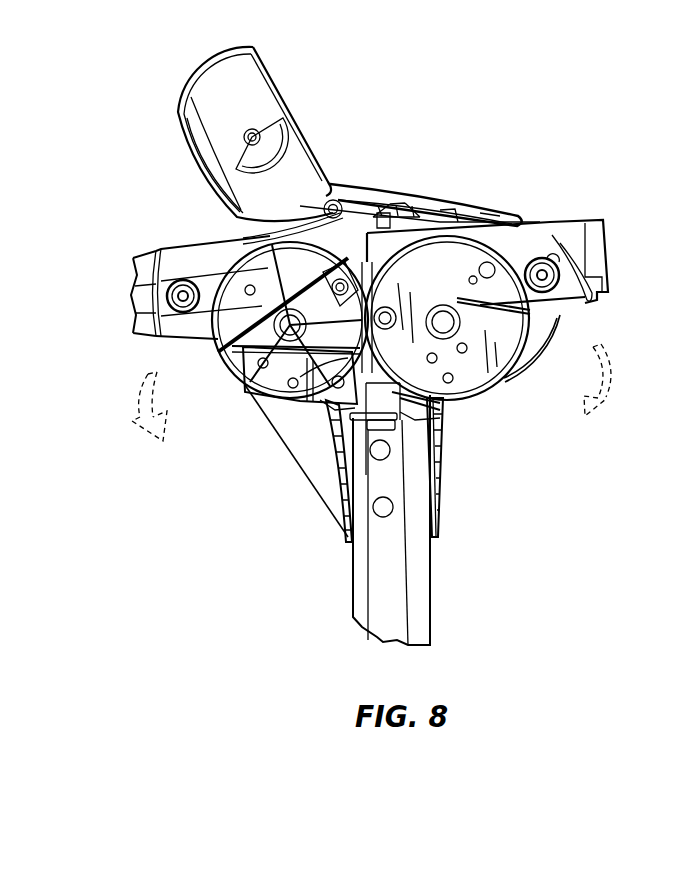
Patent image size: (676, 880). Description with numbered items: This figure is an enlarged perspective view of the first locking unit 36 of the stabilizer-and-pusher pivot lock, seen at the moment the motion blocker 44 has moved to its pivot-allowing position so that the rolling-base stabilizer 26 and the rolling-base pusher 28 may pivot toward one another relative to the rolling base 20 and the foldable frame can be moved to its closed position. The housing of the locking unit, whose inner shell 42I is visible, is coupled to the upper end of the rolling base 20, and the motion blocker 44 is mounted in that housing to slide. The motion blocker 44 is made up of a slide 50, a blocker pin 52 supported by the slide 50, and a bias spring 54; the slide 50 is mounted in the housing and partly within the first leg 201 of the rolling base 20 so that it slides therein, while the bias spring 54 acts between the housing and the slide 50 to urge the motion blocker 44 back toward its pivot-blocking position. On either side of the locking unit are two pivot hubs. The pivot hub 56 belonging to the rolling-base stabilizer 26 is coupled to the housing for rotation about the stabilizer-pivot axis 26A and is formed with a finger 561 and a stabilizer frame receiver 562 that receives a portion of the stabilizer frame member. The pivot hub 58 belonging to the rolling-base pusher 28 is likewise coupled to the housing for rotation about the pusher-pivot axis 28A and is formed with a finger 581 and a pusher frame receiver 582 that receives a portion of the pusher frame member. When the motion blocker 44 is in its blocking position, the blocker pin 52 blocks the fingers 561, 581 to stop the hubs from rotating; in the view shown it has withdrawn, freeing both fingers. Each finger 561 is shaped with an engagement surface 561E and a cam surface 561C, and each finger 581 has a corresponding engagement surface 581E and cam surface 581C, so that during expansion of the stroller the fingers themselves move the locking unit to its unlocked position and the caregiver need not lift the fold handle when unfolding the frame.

The rolling base 20 is at (440, 618).
The first leg 201 is at (433, 570).
The rolling-base stabilizer 26 is at (146, 253).
The stabilizer-pivot axis 26A is at (141, 400).
The rolling-base pusher 28 is at (595, 213).
The pusher-pivot axis 28A is at (606, 381).
The first locking unit 36 is at (385, 176).
The inner shell 42I is at (429, 200).
The motion blocker 44 is at (348, 448).
The slide 50 is at (356, 436).
The blocker pin 52 is at (374, 460).
The bias spring 54 is at (366, 600).
The pivot hub 56 is at (184, 236).
The finger 561 is at (320, 409).
The cam surface 561C is at (325, 418).
The engagement surface 561E is at (332, 398).
The stabilizer frame receiver 562 is at (207, 244).
The pivot hub 58 is at (522, 211).
The finger 581 is at (405, 412).
The cam surface 581C is at (436, 446).
The engagement surface 581E is at (414, 418).
The pusher frame receiver 582 is at (566, 216).